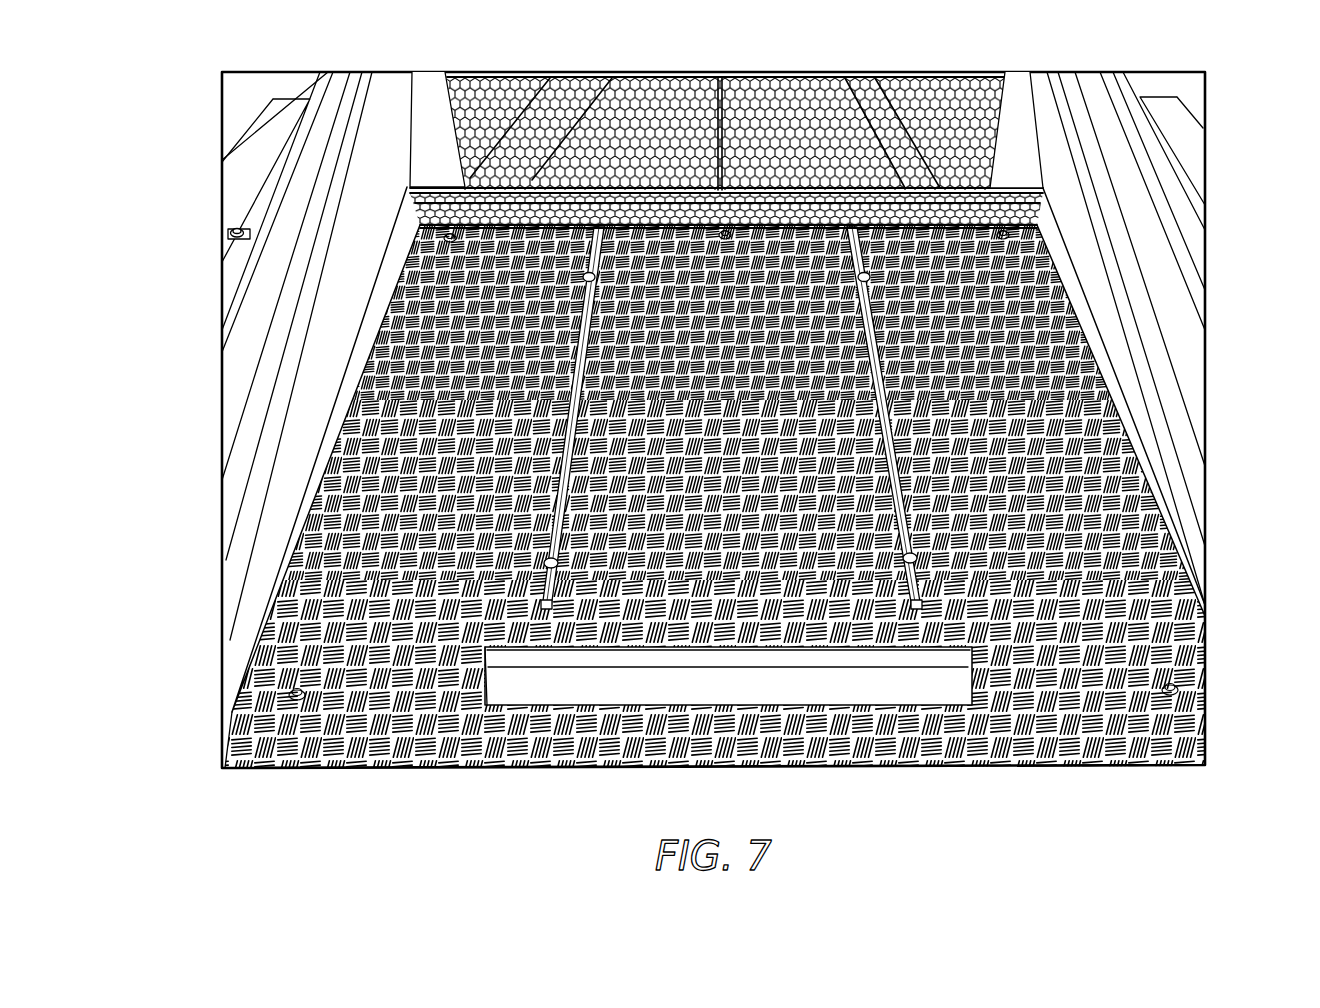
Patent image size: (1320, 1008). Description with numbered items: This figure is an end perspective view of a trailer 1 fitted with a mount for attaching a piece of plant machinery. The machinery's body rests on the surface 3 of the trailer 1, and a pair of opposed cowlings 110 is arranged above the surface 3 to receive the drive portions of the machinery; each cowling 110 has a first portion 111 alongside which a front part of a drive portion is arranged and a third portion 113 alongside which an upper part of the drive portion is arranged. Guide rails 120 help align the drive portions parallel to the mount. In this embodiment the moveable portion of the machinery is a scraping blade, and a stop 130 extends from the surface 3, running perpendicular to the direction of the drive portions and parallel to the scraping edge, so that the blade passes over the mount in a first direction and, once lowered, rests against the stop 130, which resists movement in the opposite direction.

The trailer 1 is at (262, 782).
The surface 3 is at (335, 496).
The cowling 110 is at (345, 280).
The first portion 111 is at (428, 148).
The third portion 113 is at (275, 322).
The guide rails 120 is at (290, 597).
The stop 130 is at (722, 688).